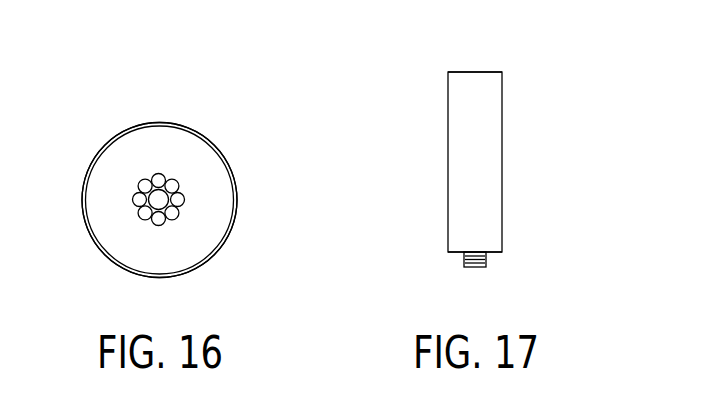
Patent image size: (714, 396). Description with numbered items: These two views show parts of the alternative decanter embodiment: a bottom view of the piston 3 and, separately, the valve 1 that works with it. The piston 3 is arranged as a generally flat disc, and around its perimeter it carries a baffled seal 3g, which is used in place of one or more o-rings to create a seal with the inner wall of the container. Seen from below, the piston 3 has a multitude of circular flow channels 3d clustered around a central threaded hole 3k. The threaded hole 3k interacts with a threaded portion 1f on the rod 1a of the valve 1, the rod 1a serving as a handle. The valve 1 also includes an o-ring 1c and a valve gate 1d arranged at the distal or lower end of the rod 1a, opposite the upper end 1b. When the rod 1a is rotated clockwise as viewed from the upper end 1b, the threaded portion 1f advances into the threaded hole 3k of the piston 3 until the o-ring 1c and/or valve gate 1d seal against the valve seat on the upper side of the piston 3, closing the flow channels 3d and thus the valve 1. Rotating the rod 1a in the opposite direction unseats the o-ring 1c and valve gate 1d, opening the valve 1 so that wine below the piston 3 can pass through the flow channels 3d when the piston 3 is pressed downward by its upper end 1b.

In FIG. 17, the valve 1 is at (466, 165).
In FIG. 17, the rod 1a is at (478, 143).
In FIG. 17, the upper end 1b is at (474, 72).
In FIG. 17, the o-ring 1c is at (503, 248).
In FIG. 17, the valve gate 1d is at (488, 256).
In FIG. 17, the threaded portion 1f is at (464, 258).
In FIG. 16, the piston 3 is at (122, 148).
In FIG. 16, the baffled seal 3g is at (85, 177).
In FIG. 16, the threaded hole 3k is at (160, 194).
In FIG. 16, the flow channels 3d is at (147, 217).